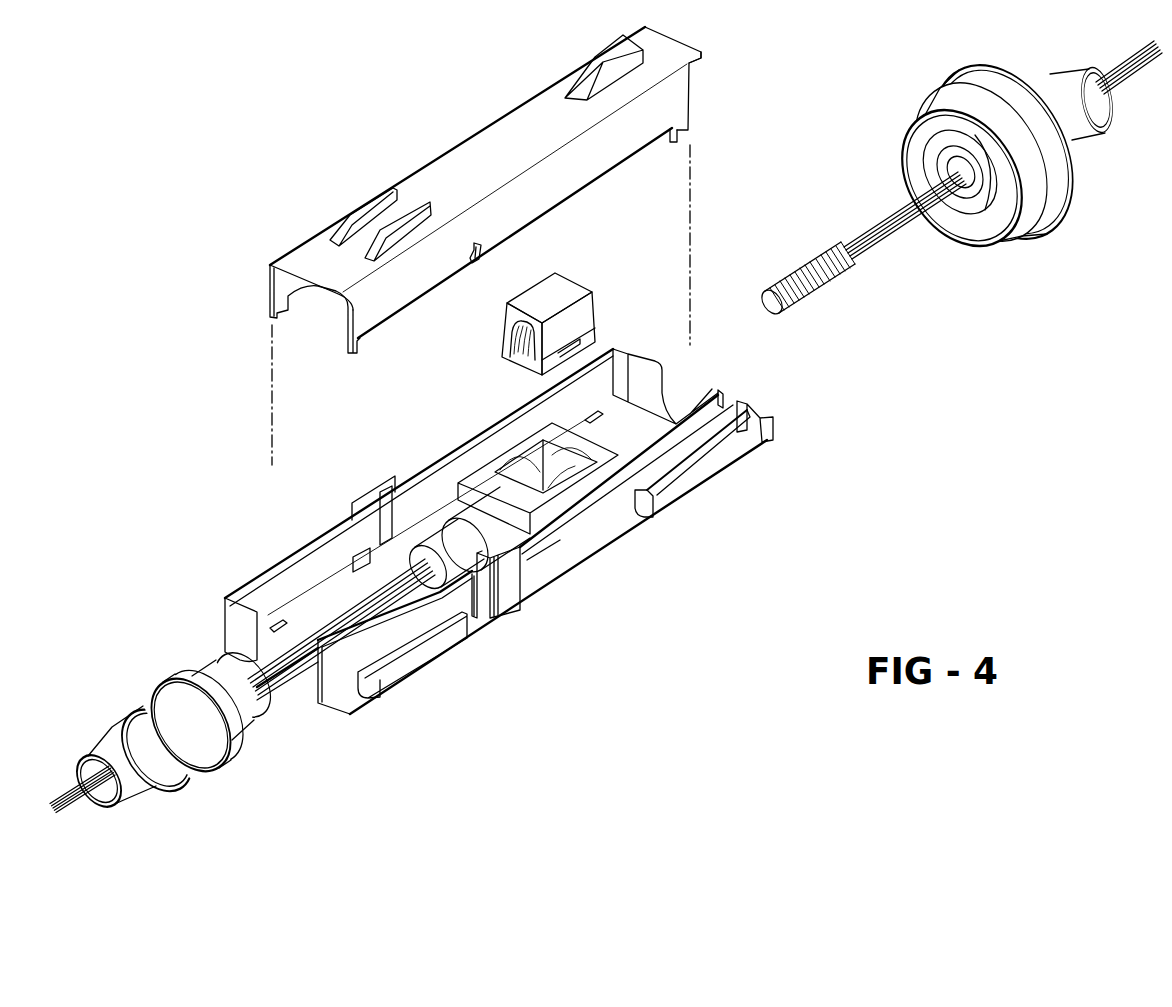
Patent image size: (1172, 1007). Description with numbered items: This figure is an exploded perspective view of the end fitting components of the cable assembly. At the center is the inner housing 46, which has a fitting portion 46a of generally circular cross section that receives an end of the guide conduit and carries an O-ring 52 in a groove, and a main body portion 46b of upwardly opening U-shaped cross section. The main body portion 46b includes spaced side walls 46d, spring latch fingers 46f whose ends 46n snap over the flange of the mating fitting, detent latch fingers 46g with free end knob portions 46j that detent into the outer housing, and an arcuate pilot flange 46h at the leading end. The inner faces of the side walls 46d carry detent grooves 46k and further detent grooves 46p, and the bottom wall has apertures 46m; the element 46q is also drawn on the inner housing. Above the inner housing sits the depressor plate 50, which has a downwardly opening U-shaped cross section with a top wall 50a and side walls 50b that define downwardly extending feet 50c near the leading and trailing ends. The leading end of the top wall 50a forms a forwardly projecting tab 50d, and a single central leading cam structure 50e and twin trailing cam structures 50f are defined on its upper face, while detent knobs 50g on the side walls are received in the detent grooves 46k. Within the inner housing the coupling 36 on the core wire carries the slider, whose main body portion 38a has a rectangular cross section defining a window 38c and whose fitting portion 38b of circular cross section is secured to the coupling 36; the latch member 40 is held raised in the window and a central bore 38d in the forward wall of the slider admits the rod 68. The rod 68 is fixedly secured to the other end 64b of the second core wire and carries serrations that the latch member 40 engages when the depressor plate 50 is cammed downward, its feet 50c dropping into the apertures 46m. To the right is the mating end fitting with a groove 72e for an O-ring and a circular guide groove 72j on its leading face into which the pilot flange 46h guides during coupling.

The coupling 36 is at (428, 518).
The main body portion 38a is at (561, 471).
The fitting portion 38b is at (440, 543).
The window 38c is at (540, 466).
The central bore 38d is at (466, 468).
The latch member 40 is at (566, 292).
The inner housing 46 is at (471, 551).
The fitting portion 46a is at (203, 678).
The main body portion 46b is at (533, 575).
The side walls 46d is at (570, 558).
The spring latch fingers 46f is at (725, 458).
The detent latch fingers 46g is at (400, 678).
The arcuate pilot flange 46h is at (651, 378).
The free end knob portions 46j is at (467, 638).
The detent grooves 46k is at (352, 508).
The apertures 46m is at (597, 410).
The ends of latch fingers 46n is at (776, 420).
The further detent grooves 46p is at (348, 544).
The housing end block 46q is at (230, 620).
The depressor plate 50 is at (543, 246).
The top wall 50a is at (432, 180).
The side walls 50b is at (622, 155).
The feet 50c is at (690, 132).
The tab 50d is at (705, 51).
The central leading cam structure 50e is at (598, 72).
The twin trailing cam structures 50f is at (365, 204).
The detent knobs 50g is at (477, 263).
The O-ring 52 is at (230, 732).
The other end of core wire 64b is at (883, 248).
The rod 68 is at (820, 290).
The groove 72e is at (980, 237).
The circular guide groove 72j is at (1001, 187).